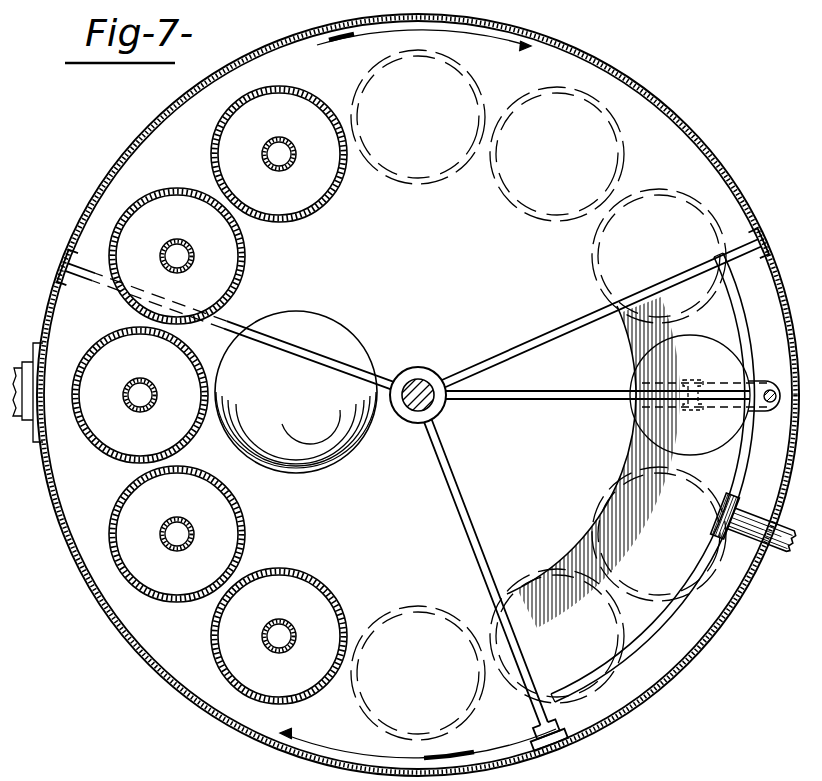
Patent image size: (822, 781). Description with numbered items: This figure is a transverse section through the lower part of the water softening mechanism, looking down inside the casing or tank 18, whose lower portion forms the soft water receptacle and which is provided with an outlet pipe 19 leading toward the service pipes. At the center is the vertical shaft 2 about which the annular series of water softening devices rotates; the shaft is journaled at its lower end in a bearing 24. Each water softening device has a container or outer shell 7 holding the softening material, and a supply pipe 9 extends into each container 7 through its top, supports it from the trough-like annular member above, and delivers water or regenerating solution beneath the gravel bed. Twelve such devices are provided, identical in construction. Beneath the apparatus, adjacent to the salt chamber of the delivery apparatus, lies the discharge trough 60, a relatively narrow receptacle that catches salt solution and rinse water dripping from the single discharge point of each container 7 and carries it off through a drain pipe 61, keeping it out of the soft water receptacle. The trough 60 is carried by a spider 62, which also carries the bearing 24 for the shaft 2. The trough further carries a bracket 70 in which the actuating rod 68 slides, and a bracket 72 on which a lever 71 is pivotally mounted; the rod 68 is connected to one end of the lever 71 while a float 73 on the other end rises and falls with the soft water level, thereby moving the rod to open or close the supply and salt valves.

The vertical shaft 2 is at (415, 382).
The container 7 is at (322, 211).
The supply pipe 9 is at (288, 145).
The casing or tank 18 is at (133, 145).
The outlet pipe 19 is at (16, 366).
The bearing 24 is at (430, 378).
The discharge trough 60 is at (702, 318).
The drain pipe 61 is at (780, 545).
The spider 62 is at (234, 318).
The actuating rod 68 is at (772, 412).
The bracket 70 is at (767, 388).
The lever 71 is at (606, 410).
The bracket 72 is at (693, 412).
The float 73 is at (296, 392).